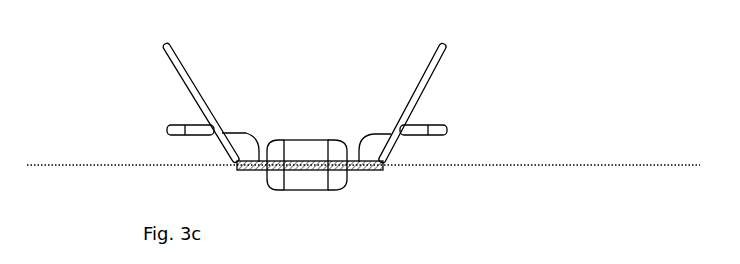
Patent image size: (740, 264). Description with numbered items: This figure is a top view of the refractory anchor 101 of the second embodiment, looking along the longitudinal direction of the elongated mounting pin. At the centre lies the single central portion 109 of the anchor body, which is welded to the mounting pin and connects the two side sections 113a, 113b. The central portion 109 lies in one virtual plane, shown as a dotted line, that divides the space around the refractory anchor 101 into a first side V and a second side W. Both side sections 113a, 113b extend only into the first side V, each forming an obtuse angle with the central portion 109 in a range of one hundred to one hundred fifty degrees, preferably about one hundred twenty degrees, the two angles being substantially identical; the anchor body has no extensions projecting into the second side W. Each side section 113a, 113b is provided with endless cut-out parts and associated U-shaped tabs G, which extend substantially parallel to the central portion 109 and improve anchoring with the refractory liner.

The refractory anchor 101 is at (363, 126).
The central portion 109 is at (357, 168).
The side section 113a is at (422, 88).
The side section 113b is at (190, 78).
The tab G is at (147, 130).
The first side V is at (291, 88).
The second side W is at (301, 222).